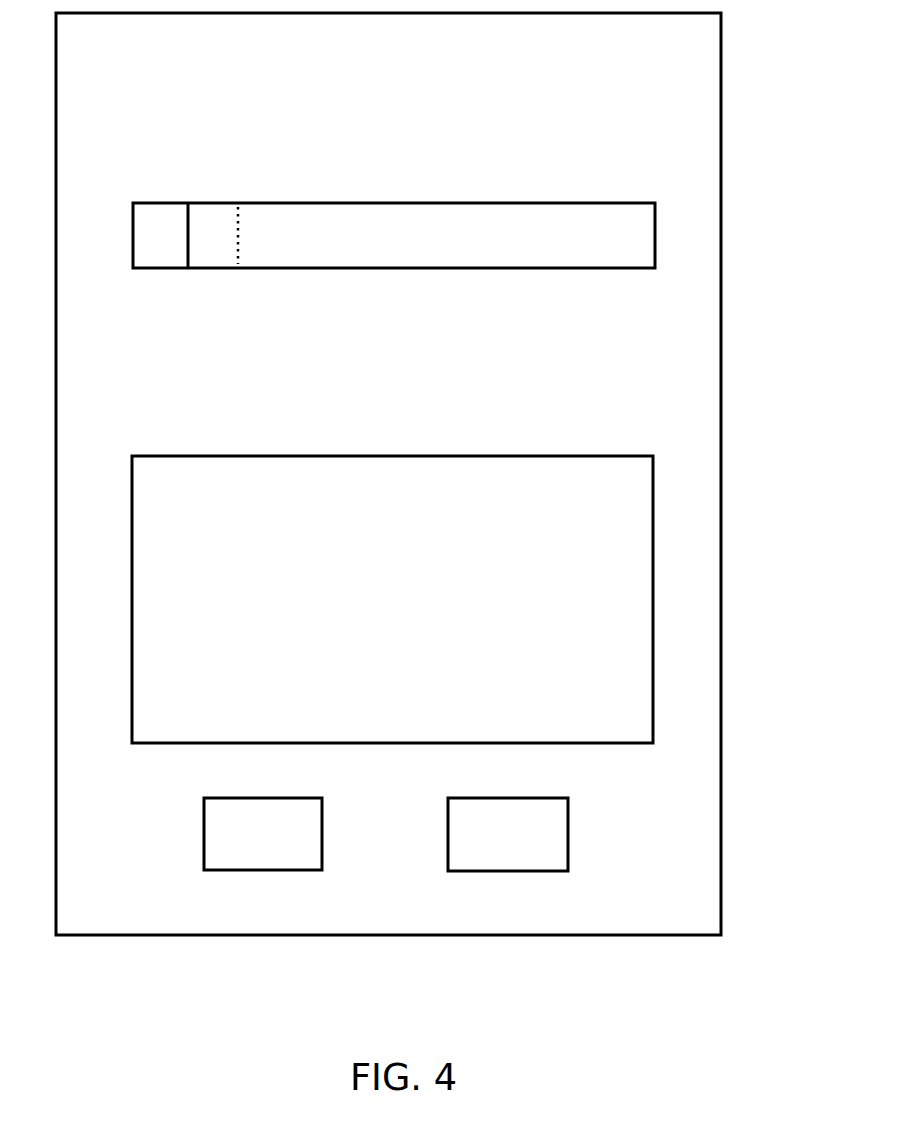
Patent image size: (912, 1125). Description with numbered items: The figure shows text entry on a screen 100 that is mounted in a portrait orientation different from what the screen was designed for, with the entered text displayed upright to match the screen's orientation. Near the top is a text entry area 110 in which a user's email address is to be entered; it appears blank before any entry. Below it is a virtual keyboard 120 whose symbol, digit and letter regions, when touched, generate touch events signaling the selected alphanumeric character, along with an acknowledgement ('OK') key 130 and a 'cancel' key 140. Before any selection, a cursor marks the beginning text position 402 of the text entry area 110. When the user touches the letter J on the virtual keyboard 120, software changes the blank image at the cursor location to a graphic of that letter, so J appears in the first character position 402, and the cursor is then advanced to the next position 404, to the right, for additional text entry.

The screen 100 is at (721, 232).
The text entry area 110 is at (575, 268).
The virtual keyboard 120 is at (507, 457).
The acknowledgement ('OK') key 130 is at (204, 835).
The 'cancel' key 140 is at (568, 838).
The first character position 402 is at (162, 268).
The next position 404 is at (217, 268).